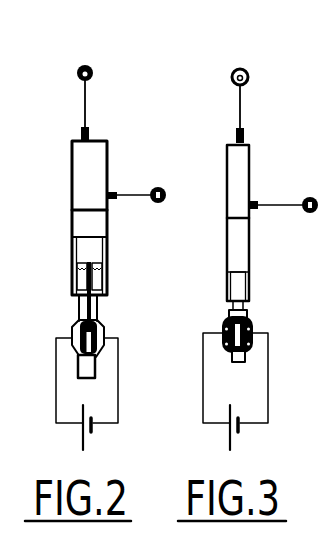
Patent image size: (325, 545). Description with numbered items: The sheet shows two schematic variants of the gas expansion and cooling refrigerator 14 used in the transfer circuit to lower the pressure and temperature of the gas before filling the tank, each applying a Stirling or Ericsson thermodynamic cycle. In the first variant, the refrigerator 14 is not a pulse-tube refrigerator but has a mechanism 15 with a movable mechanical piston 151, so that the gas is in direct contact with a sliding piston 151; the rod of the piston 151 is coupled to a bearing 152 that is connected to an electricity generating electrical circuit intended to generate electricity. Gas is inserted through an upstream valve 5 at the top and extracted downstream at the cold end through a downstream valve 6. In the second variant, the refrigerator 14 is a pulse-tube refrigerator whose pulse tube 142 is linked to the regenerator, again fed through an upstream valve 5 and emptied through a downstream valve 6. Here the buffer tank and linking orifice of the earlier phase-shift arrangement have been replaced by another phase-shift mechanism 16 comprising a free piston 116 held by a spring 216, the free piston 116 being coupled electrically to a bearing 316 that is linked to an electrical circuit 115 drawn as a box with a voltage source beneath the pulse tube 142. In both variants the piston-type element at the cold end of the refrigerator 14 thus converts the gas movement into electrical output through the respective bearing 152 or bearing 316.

In FIG. 2, the upstream valve 5 is at (84, 60).
In FIG. 3, the upstream valve 5 is at (244, 60).
In FIG. 2, the downstream valve 6 is at (160, 184).
In FIG. 3, the downstream valve 6 is at (313, 190).
In FIG. 2, the refrigerator 14 is at (134, 104).
In FIG. 3, the refrigerator 14 is at (261, 103).
In FIG. 2, the mechanism with movable mechanical piston 15 is at (106, 302).
In FIG. 3, the phase-shift mechanism 16 is at (255, 311).
In FIG. 2, the electrical circuit 115 is at (53, 361).
In FIG. 3, the electrical circuit 115 is at (271, 369).
In FIG. 3, the free piston 116 is at (254, 326).
In FIG. 2, the pulse tube 142 is at (111, 230).
In FIG. 3, the pulse tube 142 is at (251, 240).
In FIG. 2, the movable mechanical piston 151 is at (72, 258).
In FIG. 2, the bearing 152 is at (72, 322).
In FIG. 3, the spring 216 is at (241, 346).
In FIG. 3, the bearing 316 is at (220, 322).